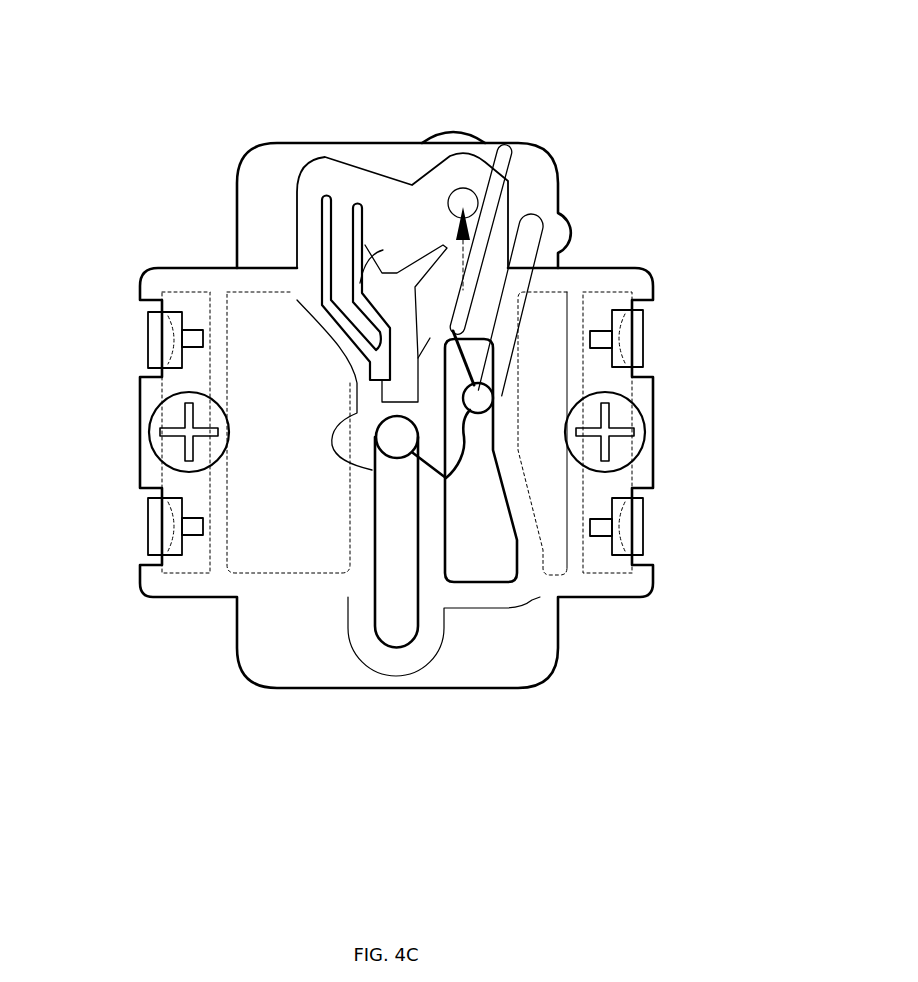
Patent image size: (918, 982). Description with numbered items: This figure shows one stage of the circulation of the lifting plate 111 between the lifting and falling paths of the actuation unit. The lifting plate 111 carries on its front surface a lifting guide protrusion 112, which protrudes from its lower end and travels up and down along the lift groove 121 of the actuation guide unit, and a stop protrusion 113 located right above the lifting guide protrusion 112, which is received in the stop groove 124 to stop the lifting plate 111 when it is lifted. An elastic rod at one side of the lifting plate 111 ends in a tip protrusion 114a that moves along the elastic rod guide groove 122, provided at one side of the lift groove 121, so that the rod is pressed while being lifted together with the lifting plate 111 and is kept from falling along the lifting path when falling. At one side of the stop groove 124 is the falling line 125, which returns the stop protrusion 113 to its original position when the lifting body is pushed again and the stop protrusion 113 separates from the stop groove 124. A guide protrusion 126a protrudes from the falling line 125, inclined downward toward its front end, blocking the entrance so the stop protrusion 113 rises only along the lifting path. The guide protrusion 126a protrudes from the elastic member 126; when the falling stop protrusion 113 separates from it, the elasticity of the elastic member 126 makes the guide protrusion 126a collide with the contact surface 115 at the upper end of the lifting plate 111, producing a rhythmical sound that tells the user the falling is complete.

The lifting plate 111 is at (400, 135).
The lifting guide protrusion 112 is at (400, 445).
The stop protrusion 113 is at (472, 193).
The tip protrusion 114a is at (482, 398).
The contact surface 115 is at (430, 143).
The lift groove 121 is at (398, 608).
The elastic rod guide groove 122 is at (480, 563).
The stop groove 124 is at (328, 143).
The falling line 125 is at (322, 230).
The elastic member 126 is at (343, 302).
The guide protrusion 126a is at (375, 357).